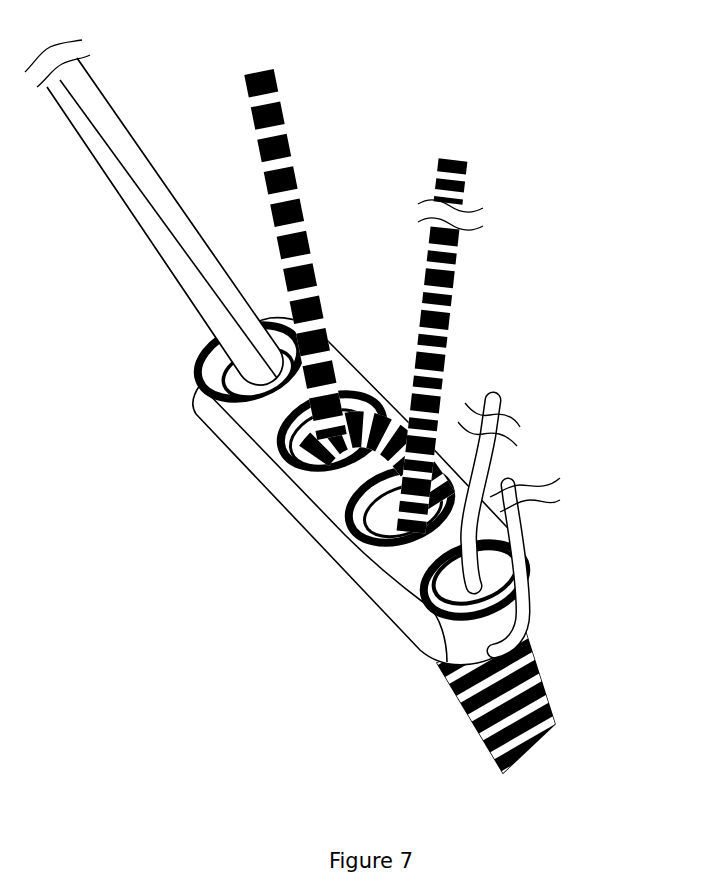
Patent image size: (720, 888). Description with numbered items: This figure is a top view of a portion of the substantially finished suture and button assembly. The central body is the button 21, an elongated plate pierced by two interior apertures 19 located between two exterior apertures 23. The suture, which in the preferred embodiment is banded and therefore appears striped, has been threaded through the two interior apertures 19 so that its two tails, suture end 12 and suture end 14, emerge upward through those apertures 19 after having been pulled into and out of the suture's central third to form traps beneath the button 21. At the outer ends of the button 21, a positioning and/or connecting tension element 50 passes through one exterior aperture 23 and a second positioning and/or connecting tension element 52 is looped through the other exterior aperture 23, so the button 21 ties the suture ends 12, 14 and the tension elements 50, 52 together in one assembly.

The suture end 12 is at (467, 160).
The suture end 14 is at (273, 68).
The interior apertures 19 is at (372, 511).
The button 21 is at (538, 573).
The exterior apertures 23 is at (252, 379).
The tension element 50 is at (95, 82).
The tension element 52 is at (522, 517).